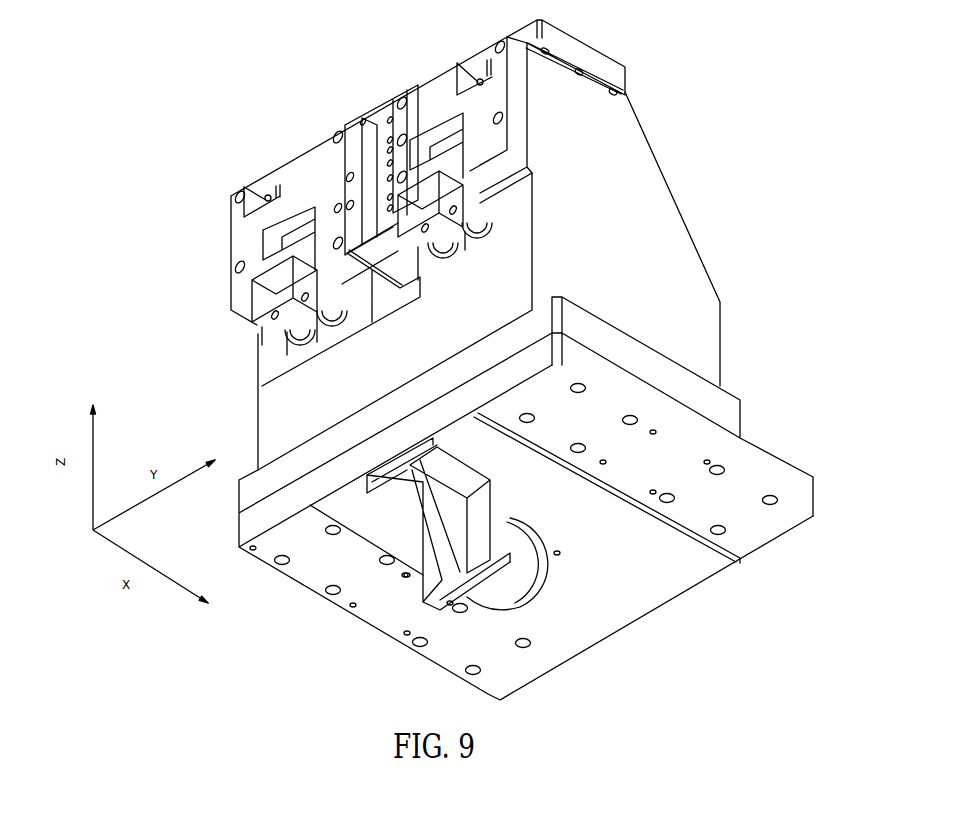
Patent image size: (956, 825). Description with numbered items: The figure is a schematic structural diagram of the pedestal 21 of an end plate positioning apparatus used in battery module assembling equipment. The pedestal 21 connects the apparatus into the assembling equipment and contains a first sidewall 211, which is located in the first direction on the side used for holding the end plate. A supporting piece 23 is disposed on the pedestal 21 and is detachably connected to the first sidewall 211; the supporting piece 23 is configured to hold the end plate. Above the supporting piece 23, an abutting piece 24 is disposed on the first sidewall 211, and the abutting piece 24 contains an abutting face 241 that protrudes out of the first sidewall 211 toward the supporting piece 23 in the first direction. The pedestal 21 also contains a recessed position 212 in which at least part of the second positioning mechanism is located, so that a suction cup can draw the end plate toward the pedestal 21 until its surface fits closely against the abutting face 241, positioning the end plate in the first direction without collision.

The pedestal 21 is at (627, 300).
The first sidewall 211 is at (470, 320).
The recessed position 212 is at (262, 386).
The supporting piece 23 is at (252, 322).
The abutting piece 24 is at (524, 108).
The abutting face 241 is at (307, 190).